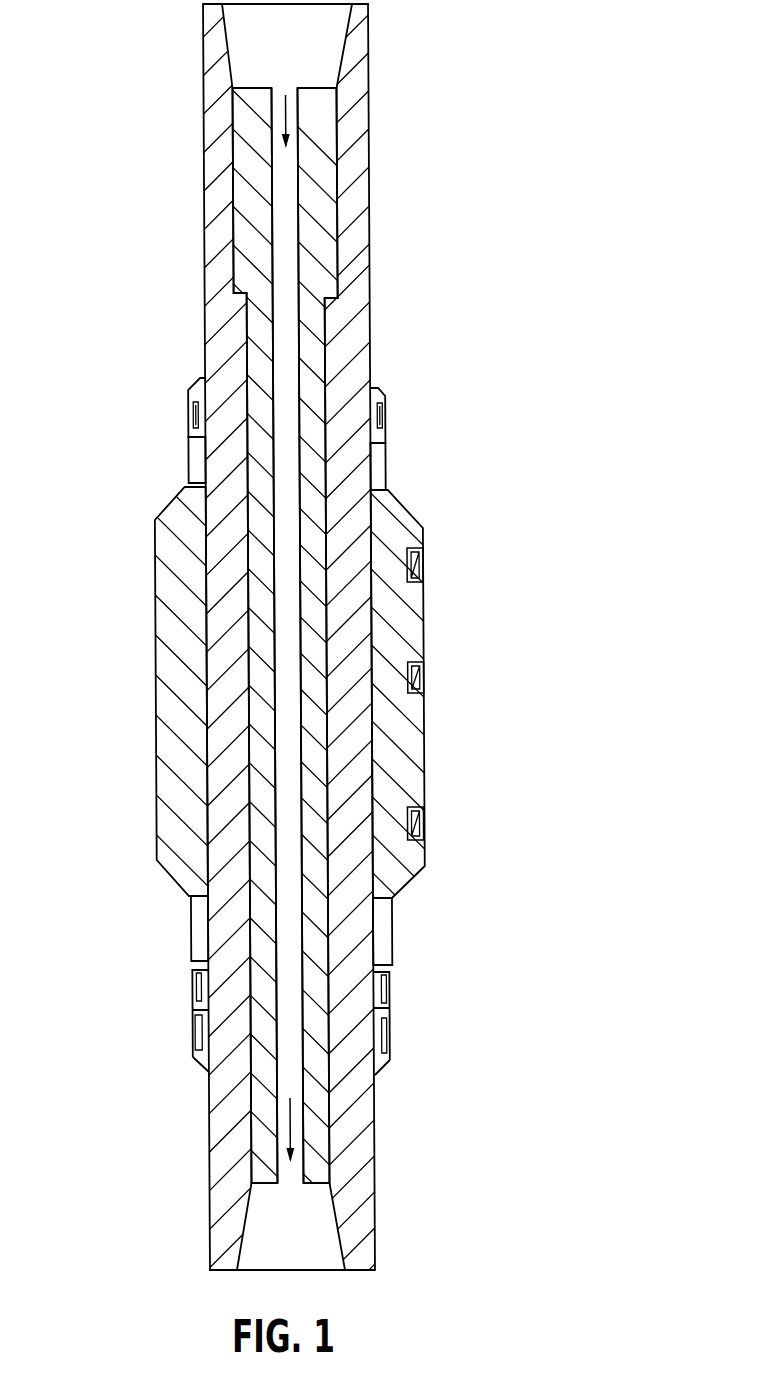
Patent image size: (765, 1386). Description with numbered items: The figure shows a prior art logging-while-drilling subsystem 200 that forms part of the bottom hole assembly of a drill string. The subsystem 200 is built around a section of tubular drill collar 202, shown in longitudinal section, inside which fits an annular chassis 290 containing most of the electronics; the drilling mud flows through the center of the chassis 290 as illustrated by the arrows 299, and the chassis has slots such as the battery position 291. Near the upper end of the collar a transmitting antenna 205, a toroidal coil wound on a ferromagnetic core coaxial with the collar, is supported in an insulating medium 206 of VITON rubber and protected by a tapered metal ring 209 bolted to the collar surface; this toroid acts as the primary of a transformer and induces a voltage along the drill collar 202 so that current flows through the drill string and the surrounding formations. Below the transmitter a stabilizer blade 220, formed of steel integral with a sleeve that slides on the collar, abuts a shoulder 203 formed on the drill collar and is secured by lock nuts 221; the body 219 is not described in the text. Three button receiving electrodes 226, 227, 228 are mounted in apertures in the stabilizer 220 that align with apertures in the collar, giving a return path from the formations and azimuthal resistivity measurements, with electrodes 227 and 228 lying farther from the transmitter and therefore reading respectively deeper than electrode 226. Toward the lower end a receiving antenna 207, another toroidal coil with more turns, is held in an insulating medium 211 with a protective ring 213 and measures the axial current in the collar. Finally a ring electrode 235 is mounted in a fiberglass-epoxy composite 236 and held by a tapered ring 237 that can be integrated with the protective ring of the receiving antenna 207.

The subsystem 200 is at (468, 73).
The drill collar 202 is at (357, 126).
The battery position 291 is at (323, 200).
The annular chassis 290 is at (314, 324).
The arrows 299 is at (286, 111).
The insulating medium 206 is at (371, 390).
The transmitting antenna 205 is at (383, 412).
The protective tapered metal ring 209 is at (383, 420).
The shoulder 203 is at (196, 467).
The packer element 219 is at (170, 553).
The stabilizer blade 220 is at (397, 512).
The receiving electrode 226 is at (421, 566).
The receiving electrode 227 is at (421, 680).
The receiving electrode 228 is at (418, 824).
The lock nuts 221 is at (188, 920).
The protective ring 213 is at (385, 984).
The receiving antenna 207 is at (383, 997).
The insulating medium 211 is at (383, 1005).
The ring electrode 235 is at (382, 1040).
The fiberglass-epoxy composite 236 is at (372, 1067).
The tapered ring 237 is at (367, 1078).